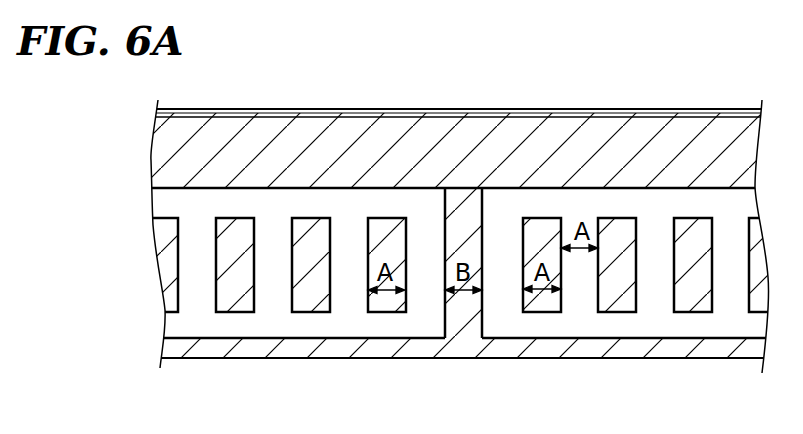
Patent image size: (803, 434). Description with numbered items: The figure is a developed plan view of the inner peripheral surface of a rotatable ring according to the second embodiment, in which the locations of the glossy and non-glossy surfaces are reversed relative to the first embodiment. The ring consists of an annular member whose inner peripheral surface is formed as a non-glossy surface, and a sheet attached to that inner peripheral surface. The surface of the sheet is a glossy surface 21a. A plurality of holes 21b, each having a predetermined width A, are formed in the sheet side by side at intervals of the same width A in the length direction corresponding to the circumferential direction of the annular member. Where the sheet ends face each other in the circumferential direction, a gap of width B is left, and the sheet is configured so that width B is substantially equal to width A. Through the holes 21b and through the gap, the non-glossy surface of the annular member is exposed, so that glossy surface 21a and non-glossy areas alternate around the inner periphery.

The glossy surface 21a is at (348, 290).
The holes 21b is at (216, 290).